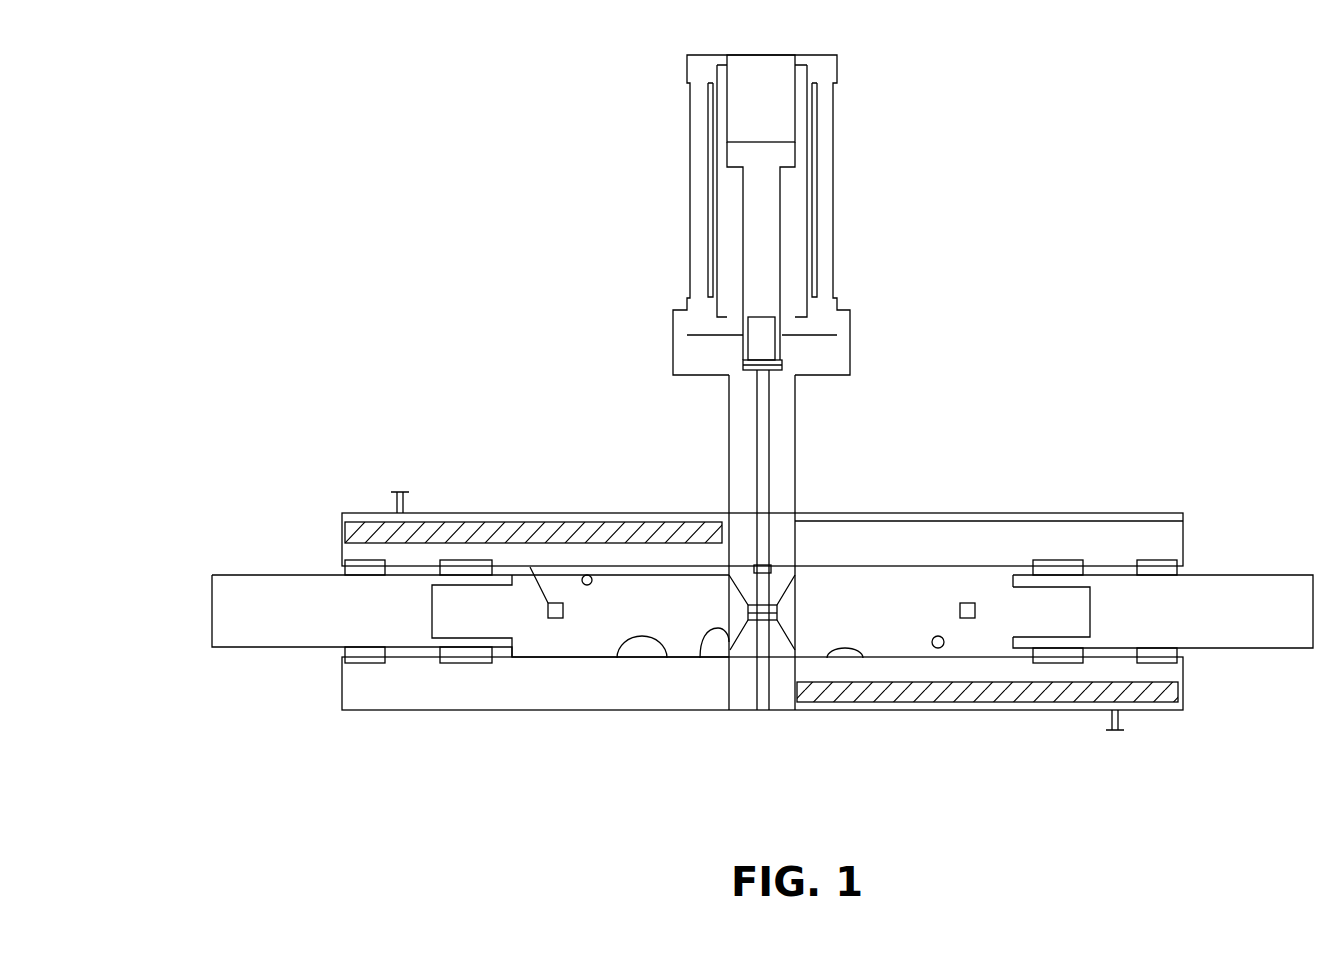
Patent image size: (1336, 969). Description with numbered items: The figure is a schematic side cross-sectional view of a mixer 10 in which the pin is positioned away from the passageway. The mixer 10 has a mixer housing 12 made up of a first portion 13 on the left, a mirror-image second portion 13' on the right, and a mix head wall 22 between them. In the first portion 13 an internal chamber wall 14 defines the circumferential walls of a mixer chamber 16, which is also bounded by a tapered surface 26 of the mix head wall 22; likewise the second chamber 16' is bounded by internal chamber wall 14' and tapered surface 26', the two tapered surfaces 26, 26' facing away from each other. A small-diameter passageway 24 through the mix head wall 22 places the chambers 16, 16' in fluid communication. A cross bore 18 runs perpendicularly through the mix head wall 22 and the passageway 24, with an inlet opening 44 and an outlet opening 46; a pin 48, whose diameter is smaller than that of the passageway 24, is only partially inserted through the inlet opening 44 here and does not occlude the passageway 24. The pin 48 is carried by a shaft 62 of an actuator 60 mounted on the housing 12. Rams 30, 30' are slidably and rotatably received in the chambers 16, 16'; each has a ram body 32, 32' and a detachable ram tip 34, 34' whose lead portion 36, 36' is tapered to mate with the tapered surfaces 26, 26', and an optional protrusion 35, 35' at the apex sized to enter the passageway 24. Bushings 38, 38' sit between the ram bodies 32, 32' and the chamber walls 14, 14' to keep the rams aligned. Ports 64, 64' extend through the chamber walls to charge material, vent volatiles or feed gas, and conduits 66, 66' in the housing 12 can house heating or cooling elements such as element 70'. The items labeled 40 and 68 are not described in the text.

The mixer 10 is at (1122, 168).
The mixer housing 12 is at (966, 505).
The first portion 13 is at (506, 478).
The second portion 13' is at (913, 497).
The internal chamber wall 14 is at (651, 707).
The internal chamber wall 14' is at (845, 705).
The mixer chamber 16 is at (565, 509).
The mixer chamber 16' is at (974, 707).
The cross bore 18 is at (765, 540).
The mix head wall 22 is at (800, 720).
The passageway 24 is at (792, 605).
The tapered surface 26 is at (724, 732).
The tapered surface 26' is at (908, 690).
The ram 30 is at (462, 646).
The ram 30' is at (1163, 653).
The ram body 32 is at (254, 555).
The ram body 32' is at (1276, 707).
The ram tip 34 is at (489, 686).
The ram tip 34' is at (1090, 553).
The protrusion 35 is at (622, 733).
The protrusion 35' is at (986, 511).
The lead portion 36 is at (563, 704).
The lead portion 36' is at (1021, 544).
The bushing 38 is at (388, 705).
The bushing 38' is at (1153, 541).
The valve member 40 is at (740, 710).
The inlet opening 44 is at (737, 513).
The outlet opening 46 is at (766, 712).
The pin 48 is at (756, 512).
The actuator 60 is at (845, 112).
The shaft 62 is at (766, 268).
The port 64 is at (513, 475).
The port 64' is at (987, 724).
The conduit 66 is at (669, 491).
The conduit 66' is at (793, 777).
The gasket recess 68 is at (643, 520).
The heating or cooling element 70' is at (908, 739).